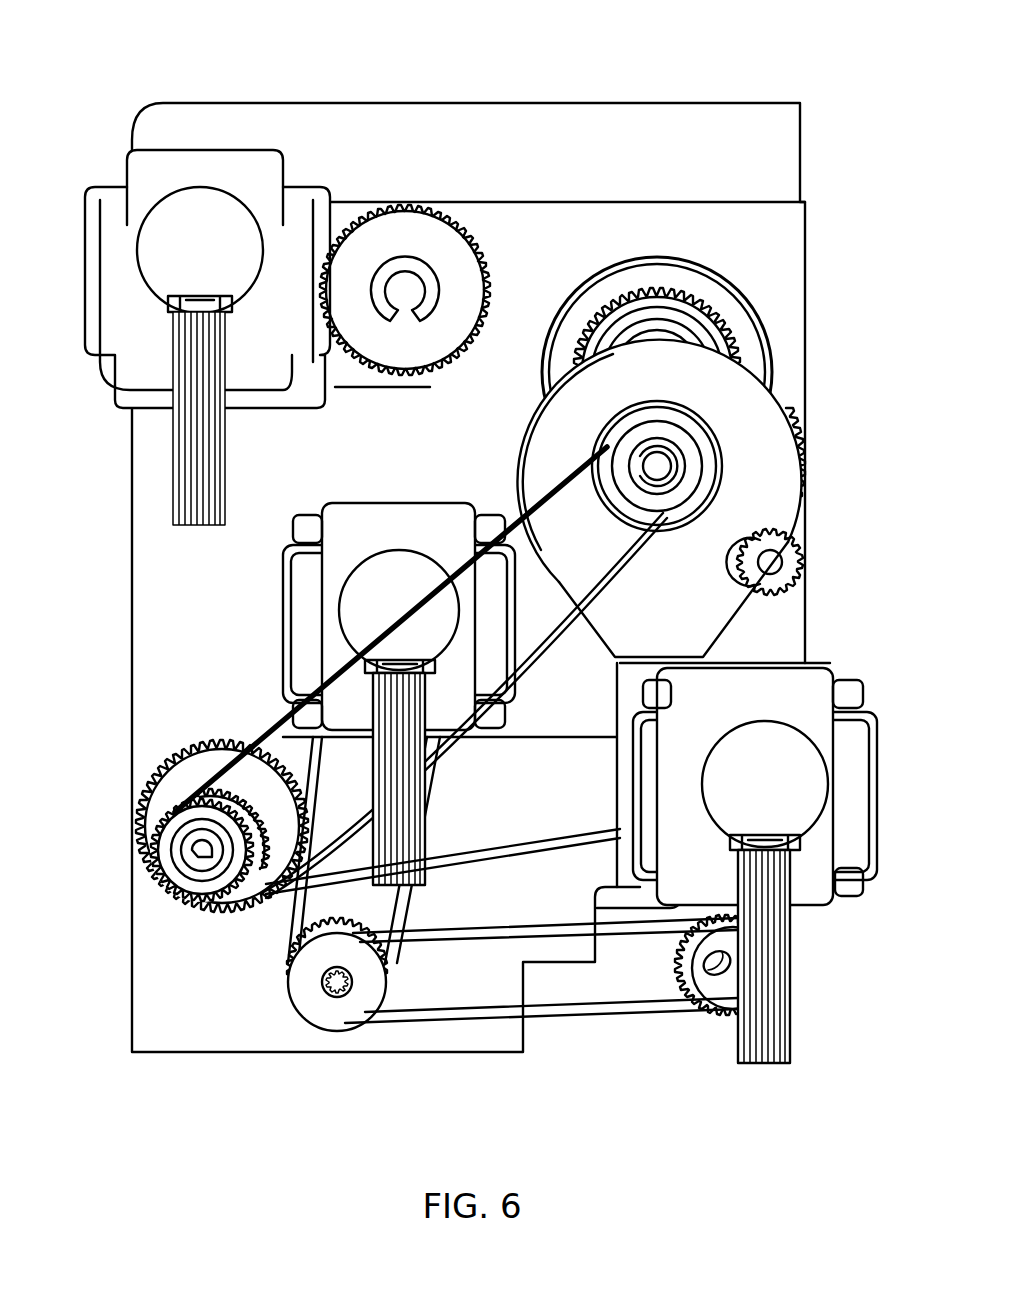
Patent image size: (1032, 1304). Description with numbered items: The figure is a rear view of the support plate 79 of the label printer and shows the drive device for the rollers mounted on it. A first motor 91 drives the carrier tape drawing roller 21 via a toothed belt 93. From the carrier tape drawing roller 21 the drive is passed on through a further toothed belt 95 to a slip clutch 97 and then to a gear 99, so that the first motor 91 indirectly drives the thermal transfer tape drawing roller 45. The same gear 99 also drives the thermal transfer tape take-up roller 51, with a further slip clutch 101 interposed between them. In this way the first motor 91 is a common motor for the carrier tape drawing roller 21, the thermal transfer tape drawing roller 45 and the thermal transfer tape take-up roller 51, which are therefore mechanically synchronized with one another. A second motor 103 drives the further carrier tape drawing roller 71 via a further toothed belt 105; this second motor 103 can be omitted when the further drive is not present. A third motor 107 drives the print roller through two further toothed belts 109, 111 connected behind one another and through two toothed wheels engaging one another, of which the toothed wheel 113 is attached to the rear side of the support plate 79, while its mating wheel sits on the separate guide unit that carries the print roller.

The support plate 79 is at (152, 618).
The further slip clutch 101 is at (620, 280).
The thermal transfer tape take-up roller 51 is at (712, 300).
The gear 99 is at (829, 503).
The slip clutch 97 is at (745, 413).
The thermal transfer tape drawing roller 45 is at (808, 562).
The second motor 103 is at (198, 168).
The further toothed belt 105 is at (355, 390).
The further carrier tape drawing roller 71 is at (405, 280).
The third motor 107 is at (300, 592).
The toothed belt 93 is at (495, 852).
The first motor 91 is at (853, 727).
The further toothed belt 111 is at (575, 1010).
The toothed wheel 113 is at (692, 1000).
The further toothed belt 109 is at (298, 918).
The carrier tape drawing roller 21 is at (202, 852).
The further toothed belt 95 is at (540, 623).